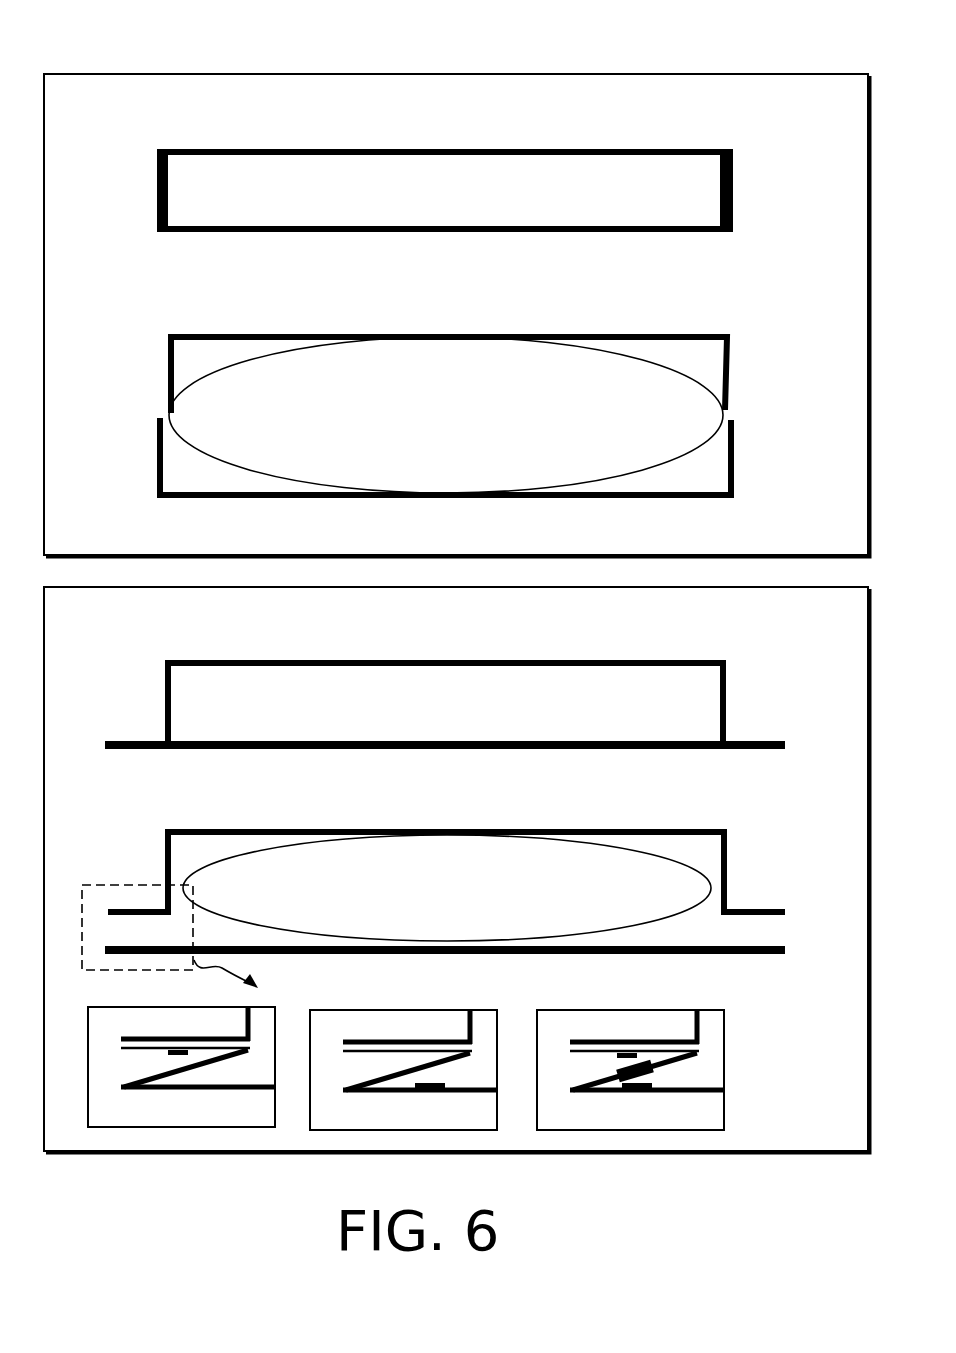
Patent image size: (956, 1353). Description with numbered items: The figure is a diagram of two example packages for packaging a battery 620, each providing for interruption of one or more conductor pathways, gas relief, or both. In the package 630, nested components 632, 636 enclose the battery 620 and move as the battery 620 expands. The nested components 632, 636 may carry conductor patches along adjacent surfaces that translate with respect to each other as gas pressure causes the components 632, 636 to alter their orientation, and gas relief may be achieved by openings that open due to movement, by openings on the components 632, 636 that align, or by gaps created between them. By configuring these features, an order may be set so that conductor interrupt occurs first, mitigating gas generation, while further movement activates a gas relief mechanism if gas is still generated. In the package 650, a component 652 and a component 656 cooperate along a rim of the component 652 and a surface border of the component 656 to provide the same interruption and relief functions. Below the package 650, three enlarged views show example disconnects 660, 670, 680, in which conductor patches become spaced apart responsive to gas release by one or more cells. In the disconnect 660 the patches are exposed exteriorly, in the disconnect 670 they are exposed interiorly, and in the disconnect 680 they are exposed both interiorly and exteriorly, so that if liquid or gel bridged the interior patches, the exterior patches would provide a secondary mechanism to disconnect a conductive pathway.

The battery 620 is at (446, 559).
The package 630 is at (457, 315).
The nested component 632 is at (490, 256).
The nested component 636 is at (485, 346).
The package 650 is at (457, 870).
The component 652 is at (465, 765).
The component 656 is at (459, 867).
The disconnect 660 is at (181, 1067).
The disconnect 670 is at (403, 1070).
The disconnect 680 is at (630, 1070).